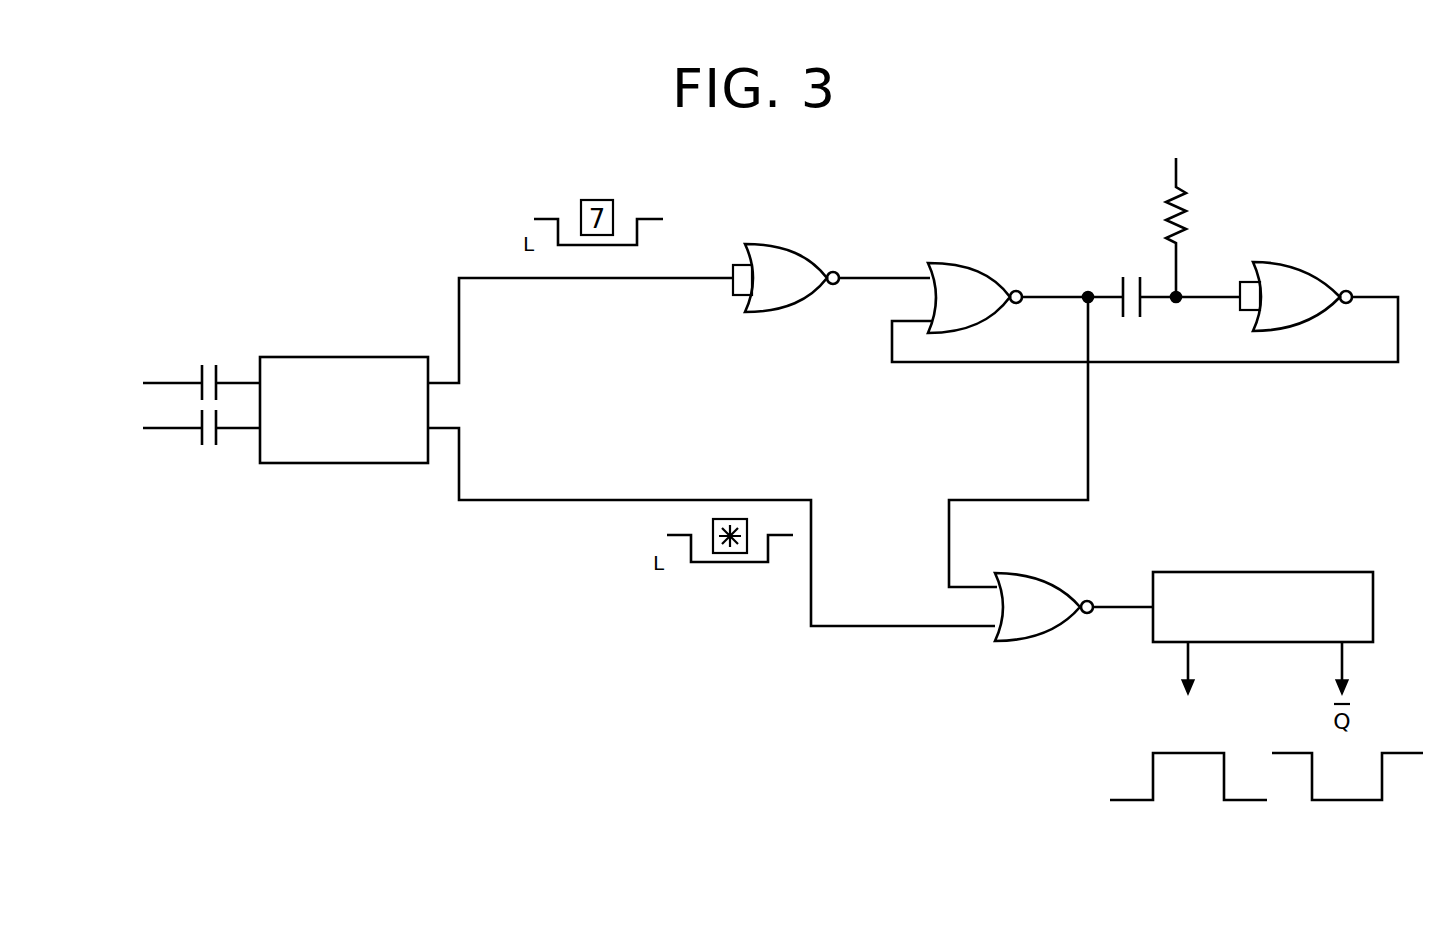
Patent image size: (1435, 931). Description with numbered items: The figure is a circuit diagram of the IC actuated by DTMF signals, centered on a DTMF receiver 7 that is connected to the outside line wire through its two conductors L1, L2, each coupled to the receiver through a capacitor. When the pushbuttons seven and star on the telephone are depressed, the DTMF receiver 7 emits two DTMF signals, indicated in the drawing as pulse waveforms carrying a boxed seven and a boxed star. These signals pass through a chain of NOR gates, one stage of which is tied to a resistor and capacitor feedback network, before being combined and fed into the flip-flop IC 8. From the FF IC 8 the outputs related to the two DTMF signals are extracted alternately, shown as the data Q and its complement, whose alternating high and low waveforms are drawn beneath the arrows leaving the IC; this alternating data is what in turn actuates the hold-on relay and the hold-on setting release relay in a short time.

The DTMF receiver 7 is at (360, 367).
The flip-flop IC 8 is at (1325, 583).
The outside line wire L1 is at (176, 382).
The outside line wire L2 is at (176, 427).
The output data Q is at (1188, 721).